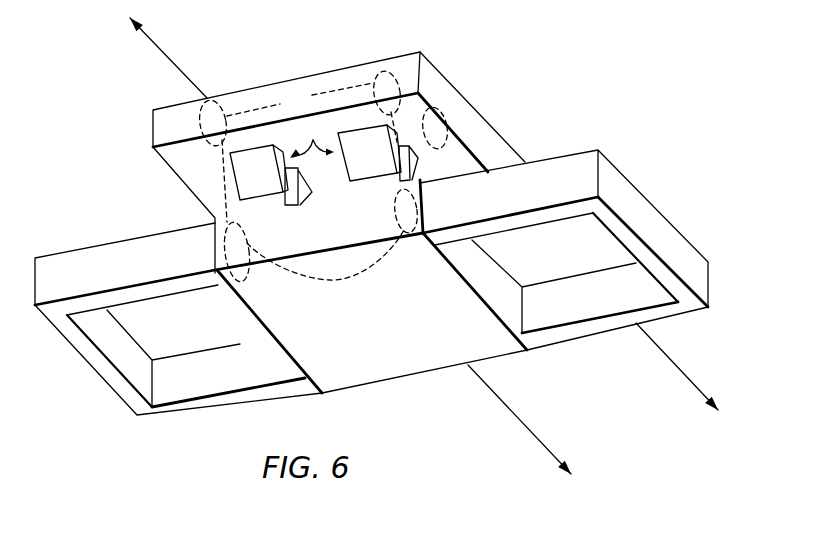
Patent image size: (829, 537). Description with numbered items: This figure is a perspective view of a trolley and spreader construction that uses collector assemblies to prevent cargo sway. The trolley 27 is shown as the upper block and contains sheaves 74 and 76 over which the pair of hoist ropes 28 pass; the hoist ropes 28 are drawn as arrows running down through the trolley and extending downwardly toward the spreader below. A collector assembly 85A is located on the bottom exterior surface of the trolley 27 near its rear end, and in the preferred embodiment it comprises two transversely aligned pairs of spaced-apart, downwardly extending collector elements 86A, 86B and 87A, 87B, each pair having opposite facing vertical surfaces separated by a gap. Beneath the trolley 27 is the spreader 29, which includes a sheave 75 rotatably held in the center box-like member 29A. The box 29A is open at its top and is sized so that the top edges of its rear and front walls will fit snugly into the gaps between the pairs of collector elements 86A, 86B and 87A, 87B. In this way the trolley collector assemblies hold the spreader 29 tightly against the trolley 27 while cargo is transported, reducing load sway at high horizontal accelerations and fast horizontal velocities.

The trolley 27 is at (153, 133).
The hoist ropes 28 is at (180, 67).
The spreader 29 is at (683, 222).
The center box-like member 29A is at (387, 378).
The sheave 74 is at (299, 108).
The sheave 75 is at (320, 197).
The sheave 76 is at (447, 113).
The collector assembly 85A is at (312, 139).
The collector element 86A is at (352, 183).
The collector element 86B is at (418, 162).
The collector element 87A is at (235, 190).
The collector element 87B is at (300, 180).